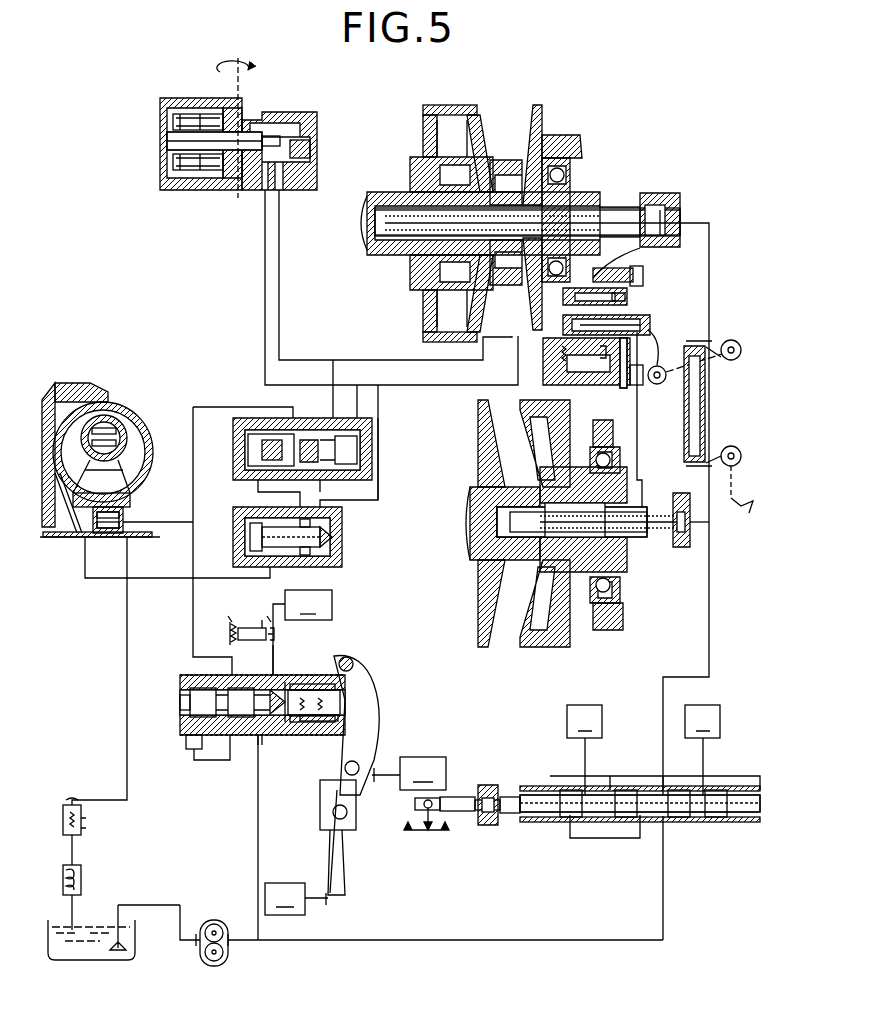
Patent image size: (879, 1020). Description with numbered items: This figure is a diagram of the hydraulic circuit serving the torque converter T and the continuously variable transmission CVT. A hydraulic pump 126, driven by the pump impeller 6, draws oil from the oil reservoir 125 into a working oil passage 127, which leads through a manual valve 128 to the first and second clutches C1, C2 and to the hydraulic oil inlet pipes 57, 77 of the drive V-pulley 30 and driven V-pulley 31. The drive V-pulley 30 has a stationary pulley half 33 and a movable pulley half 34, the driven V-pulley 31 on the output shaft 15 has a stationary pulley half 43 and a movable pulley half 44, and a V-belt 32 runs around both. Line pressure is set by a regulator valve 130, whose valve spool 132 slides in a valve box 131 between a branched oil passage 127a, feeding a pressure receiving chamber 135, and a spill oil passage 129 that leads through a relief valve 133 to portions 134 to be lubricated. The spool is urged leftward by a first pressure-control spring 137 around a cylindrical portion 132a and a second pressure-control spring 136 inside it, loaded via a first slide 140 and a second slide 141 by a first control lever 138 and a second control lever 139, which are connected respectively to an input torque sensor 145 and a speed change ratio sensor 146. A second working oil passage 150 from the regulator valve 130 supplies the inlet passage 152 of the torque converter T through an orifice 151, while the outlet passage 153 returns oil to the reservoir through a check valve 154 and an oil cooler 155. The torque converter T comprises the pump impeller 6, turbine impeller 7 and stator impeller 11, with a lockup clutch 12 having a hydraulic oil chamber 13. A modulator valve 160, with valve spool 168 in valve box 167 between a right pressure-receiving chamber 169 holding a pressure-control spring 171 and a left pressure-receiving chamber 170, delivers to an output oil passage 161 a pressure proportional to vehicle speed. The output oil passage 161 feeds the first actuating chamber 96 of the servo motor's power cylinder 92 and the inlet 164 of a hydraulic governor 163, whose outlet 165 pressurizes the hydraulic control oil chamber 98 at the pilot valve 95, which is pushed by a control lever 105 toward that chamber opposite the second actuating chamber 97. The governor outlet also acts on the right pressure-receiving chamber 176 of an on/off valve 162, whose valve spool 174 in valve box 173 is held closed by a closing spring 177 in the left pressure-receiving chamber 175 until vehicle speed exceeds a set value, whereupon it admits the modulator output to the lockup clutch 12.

The hydraulic governor 163 is at (274, 104).
The inlet 164 is at (264, 196).
The outlet 165 is at (282, 196).
The continuously variable transmission CVT is at (450, 92).
The drive V-pulley 30 is at (520, 197).
The movable pulley half 34 is at (480, 112).
The stationary pulley half 33 is at (533, 112).
The V-belt 32 is at (505, 160).
The hydraulic oil inlet pipe 57 is at (614, 226).
The first actuating chamber 96 is at (607, 267).
The pilot valve 95 is at (584, 298).
The second actuating chamber 97 is at (628, 310).
The hydraulic control oil chamber 98 is at (597, 324).
The power cylinder 92 is at (596, 386).
The control lever 105 is at (663, 357).
The driven V-pulley 31 is at (571, 550).
The stationary pulley half 43 is at (484, 648).
The movable pulley half 44 is at (542, 539).
The output shaft 15 is at (470, 507).
The hydraulic oil inlet pipe 77 is at (652, 529).
The torque converter T is at (102, 441).
The pump impeller 6 is at (133, 407).
The turbine impeller 7 is at (55, 410).
The lockup clutch 12 is at (125, 433).
The hydraulic oil chamber 13 is at (92, 441).
The stator impeller 11 is at (112, 478).
The orifice 151 is at (165, 520).
The inlet passage 152 is at (160, 537).
The outlet passage 153 is at (125, 659).
The second working oil passage 150 is at (192, 618).
The modulator valve 160 is at (305, 449).
The valve box 167 is at (320, 418).
The valve spool 168 is at (271, 450).
The right pressure-receiving chamber 169 is at (360, 440).
The pressure-control spring 171 is at (360, 452).
The left pressure-receiving chamber 170 is at (270, 470).
The output oil passage 161 is at (380, 466).
The on/off valve 162 is at (297, 547).
The closing spring 177 is at (250, 528).
The left pressure-receiving chamber 175 is at (258, 545).
The right pressure-receiving chamber 176 is at (332, 524).
The valve spool 174 is at (328, 548).
The valve box 173 is at (312, 567).
The relief valve 133 is at (252, 624).
The portions to be lubricated 134 is at (302, 632).
The spill oil passage 129 is at (272, 658).
The regulator valve 130 is at (264, 707).
The valve box 131 is at (184, 680).
The valve spool 132 is at (180, 699).
The first pressure-control spring 137 is at (291, 680).
The first slide 140 is at (315, 682).
The second slide 141 is at (342, 700).
The pressure receiving chamber 135 is at (182, 724).
The second pressure-control spring 136 is at (282, 735).
The cylindrical portion 132a is at (335, 724).
The first control lever 138 is at (340, 768).
The second control lever 139 is at (378, 728).
The speed change ratio sensor 146 is at (409, 773).
The input torque sensor 145 is at (296, 899).
The branched oil passage 127a is at (257, 840).
The working oil passage 127 is at (465, 938).
The hydraulic pump 126 is at (213, 918).
The oil reservoir 125 is at (98, 960).
The check valve 154 is at (82, 828).
The oil cooler 155 is at (82, 881).
The manual valve 128 is at (579, 780).
The first clutch C1 is at (584, 750).
The second clutch C2 is at (702, 750).